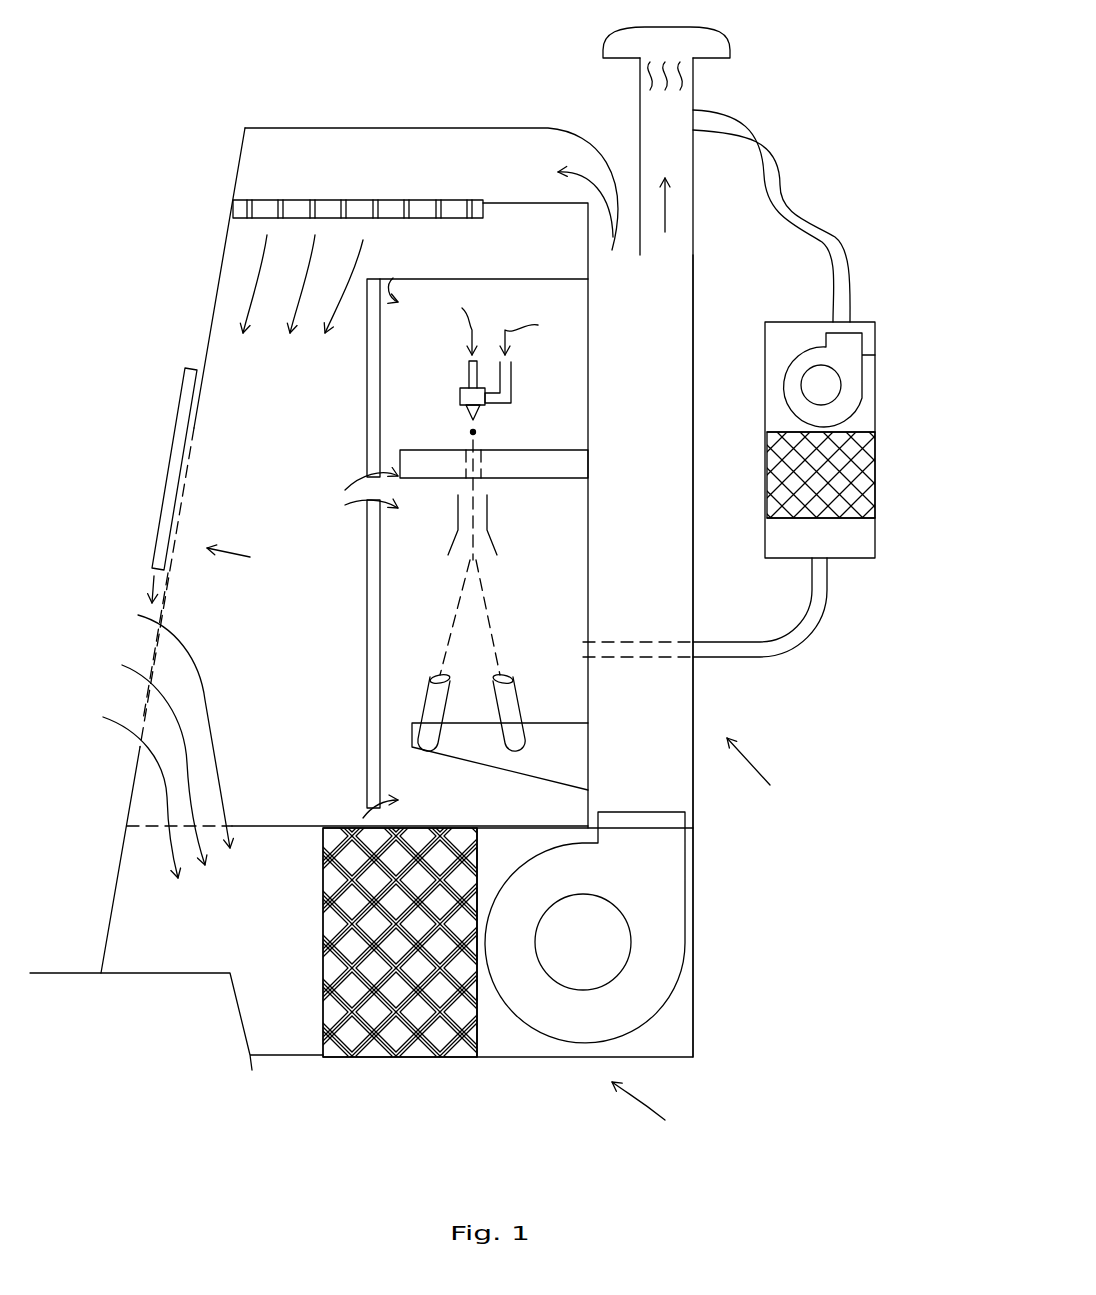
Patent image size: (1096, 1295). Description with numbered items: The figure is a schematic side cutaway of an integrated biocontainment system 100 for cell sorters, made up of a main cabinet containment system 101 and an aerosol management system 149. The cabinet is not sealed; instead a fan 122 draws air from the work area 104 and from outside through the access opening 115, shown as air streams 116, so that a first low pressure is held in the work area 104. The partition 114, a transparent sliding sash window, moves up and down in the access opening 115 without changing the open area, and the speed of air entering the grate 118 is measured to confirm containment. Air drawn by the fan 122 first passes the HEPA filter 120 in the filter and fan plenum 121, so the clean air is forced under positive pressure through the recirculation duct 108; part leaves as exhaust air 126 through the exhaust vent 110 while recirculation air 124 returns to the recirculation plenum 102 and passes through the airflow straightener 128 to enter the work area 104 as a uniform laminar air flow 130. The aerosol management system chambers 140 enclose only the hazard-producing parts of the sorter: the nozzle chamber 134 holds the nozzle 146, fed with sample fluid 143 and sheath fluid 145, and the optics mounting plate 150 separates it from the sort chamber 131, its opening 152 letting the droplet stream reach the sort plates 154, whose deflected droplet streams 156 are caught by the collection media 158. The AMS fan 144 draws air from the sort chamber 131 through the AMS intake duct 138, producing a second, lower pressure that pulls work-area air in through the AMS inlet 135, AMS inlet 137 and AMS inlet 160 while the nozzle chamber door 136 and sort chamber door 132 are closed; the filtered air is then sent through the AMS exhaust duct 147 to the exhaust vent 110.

The integrated biocontainment system 100 is at (778, 1121).
The main cabinet containment system 101 is at (214, 277).
The recirculation plenum 102 is at (347, 163).
The work area 104 is at (246, 675).
The recirculation duct 108 is at (652, 725).
The exhaust vent 110 is at (728, 35).
The partition 114 is at (175, 440).
The access opening 115 is at (282, 573).
The air streams 116 is at (95, 655).
The grate 118 is at (150, 810).
The HEPA filter 120 is at (425, 1035).
The filter and fan plenum 121 is at (264, 962).
The fan 122 is at (655, 975).
The recirculation air 124 is at (585, 170).
The exhaust air 126 is at (662, 232).
The airflow straightener 128 is at (253, 200).
The laminar air flow 130 is at (380, 247).
The sort chamber 131 is at (435, 617).
The sort chamber door 132 is at (367, 650).
The nozzle chamber 134 is at (430, 388).
The AMS inlet 135 is at (452, 277).
The nozzle chamber door 136 is at (367, 380).
The AMS inlet 137 is at (365, 488).
The AMS intake duct 138 is at (808, 610).
The aerosol management system chambers 140 is at (598, 443).
The sample fluid 143 is at (514, 319).
The AMS fan 144 is at (875, 355).
The sheath fluid 145 is at (536, 332).
The nozzle 146 is at (862, 445).
The AMS exhaust duct 147 is at (775, 205).
The aerosol management system 149 is at (771, 797).
The optics mounting plate 150 is at (590, 446).
The opening 152 is at (468, 438).
The sort plates 154 is at (493, 502).
The deflected droplet streams 156 is at (493, 577).
The collection media 158 is at (492, 707).
The AMS inlet 160 is at (363, 818).